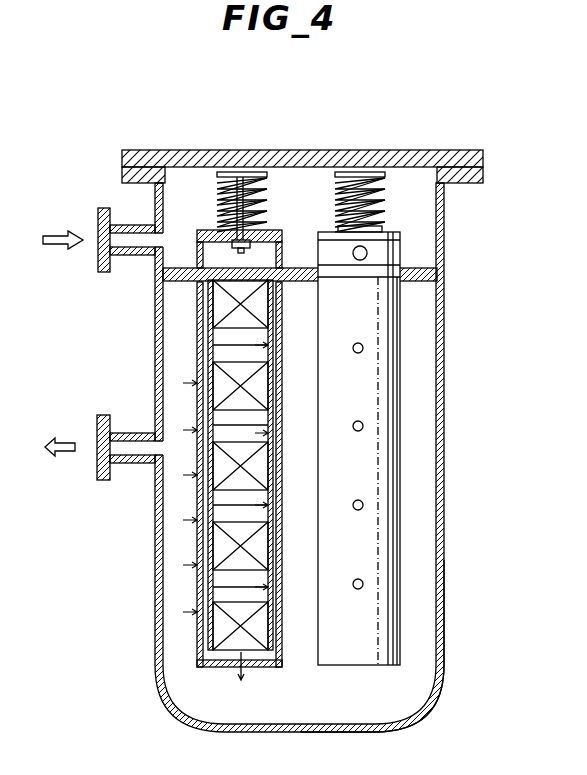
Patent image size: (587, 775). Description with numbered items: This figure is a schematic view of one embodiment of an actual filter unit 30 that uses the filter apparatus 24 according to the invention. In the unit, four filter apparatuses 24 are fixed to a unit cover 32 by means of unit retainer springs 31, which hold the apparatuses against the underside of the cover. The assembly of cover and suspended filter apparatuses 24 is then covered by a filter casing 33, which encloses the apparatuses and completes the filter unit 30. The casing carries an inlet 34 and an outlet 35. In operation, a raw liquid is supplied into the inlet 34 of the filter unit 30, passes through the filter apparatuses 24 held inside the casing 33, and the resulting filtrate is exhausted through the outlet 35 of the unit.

The filter apparatus 24 is at (197, 565).
The filter unit 30 is at (445, 372).
The unit retainer spring 31 is at (270, 183).
The unit cover 32 is at (416, 150).
The filter casing 33 is at (445, 604).
The inlet 34 is at (105, 240).
The outlet 35 is at (100, 448).